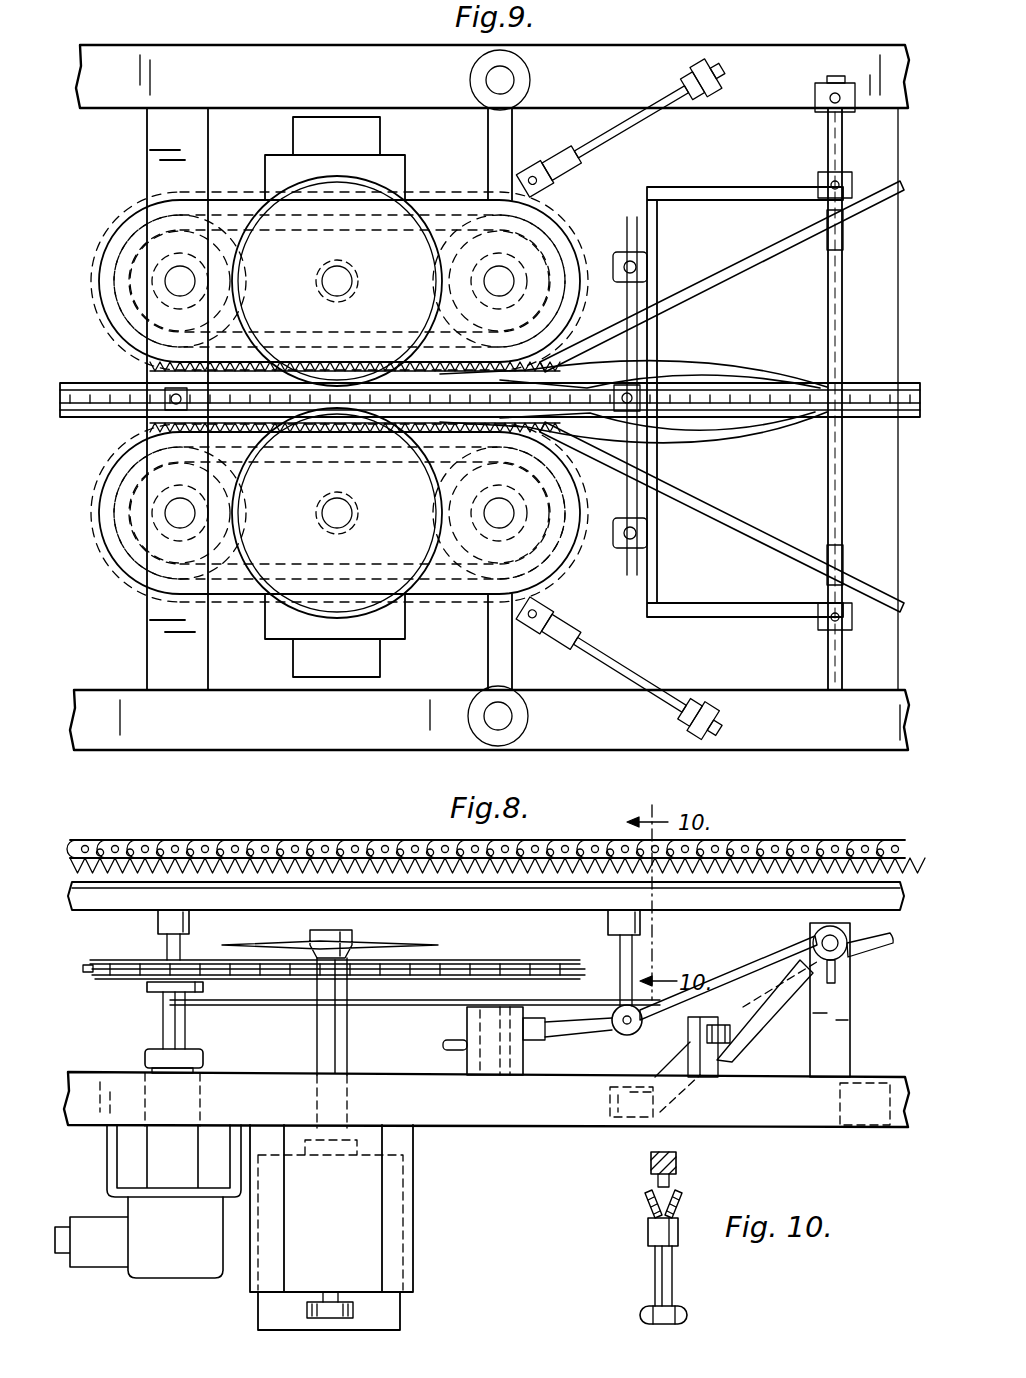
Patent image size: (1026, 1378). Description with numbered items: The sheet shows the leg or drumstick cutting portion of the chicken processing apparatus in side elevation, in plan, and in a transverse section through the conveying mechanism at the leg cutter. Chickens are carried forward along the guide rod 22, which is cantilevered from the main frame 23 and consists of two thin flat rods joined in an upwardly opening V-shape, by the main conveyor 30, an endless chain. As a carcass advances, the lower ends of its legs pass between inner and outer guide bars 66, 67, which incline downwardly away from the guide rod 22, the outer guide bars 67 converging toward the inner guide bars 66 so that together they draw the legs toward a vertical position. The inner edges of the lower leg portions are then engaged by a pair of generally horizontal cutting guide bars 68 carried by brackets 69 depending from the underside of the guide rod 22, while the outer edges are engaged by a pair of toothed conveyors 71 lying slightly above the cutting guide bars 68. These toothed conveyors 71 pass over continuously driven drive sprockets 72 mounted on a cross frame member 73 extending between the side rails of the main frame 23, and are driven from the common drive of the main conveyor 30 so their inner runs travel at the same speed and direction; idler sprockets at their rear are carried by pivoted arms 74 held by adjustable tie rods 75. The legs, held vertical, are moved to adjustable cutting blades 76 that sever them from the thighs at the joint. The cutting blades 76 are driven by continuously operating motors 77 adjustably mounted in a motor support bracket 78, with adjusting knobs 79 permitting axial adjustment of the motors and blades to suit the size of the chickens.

In FIG. 9, the guide rod 22 is at (96, 432).
In FIG. 8, the guide rod 22 is at (522, 913).
In FIG. 10, the guide rod 22 is at (645, 1205).
In FIG. 9, the main frame 23 is at (290, 48).
In FIG. 9, the main conveyor 30 is at (102, 380).
In FIG. 8, the main conveyor 30 is at (292, 846).
In FIG. 10, the main conveyor 30 is at (677, 1163).
In FIG. 9, the inner guide bars 66 is at (738, 364).
In FIG. 9, the outer guide bars 67 is at (770, 256).
In FIG. 8, the outer guide bars 67 is at (737, 988).
In FIG. 9, the cutting guide bars 68 is at (262, 340).
In FIG. 8, the cutting guide bars 68 is at (300, 1003).
In FIG. 10, the cutting guide bars 68 is at (664, 1324).
In FIG. 9, the brackets 69 is at (160, 412).
In FIG. 8, the brackets 69 is at (157, 925).
In FIG. 10, the brackets 69 is at (650, 1240).
In FIG. 9, the toothed conveyors 71 is at (130, 207).
In FIG. 8, the toothed conveyors 71 is at (88, 962).
In FIG. 9, the drive sprockets 72 is at (232, 238).
In FIG. 8, the drive sprockets 72 is at (147, 986).
In FIG. 9, the cross frame member 73 is at (150, 163).
In FIG. 9, the pivoted arms 74 is at (490, 130).
In FIG. 9, the adjustable tie rods 75 is at (626, 130).
In FIG. 8, the adjustable tie rods 75 is at (604, 1040).
In FIG. 9, the cutting blades 76 is at (292, 180).
In FIG. 8, the cutting blades 76 is at (282, 945).
In FIG. 9, the motors 77 is at (405, 172).
In FIG. 8, the motors 77 is at (268, 1310).
In FIG. 8, the motor support bracket 78 is at (413, 1184).
In FIG. 8, the adjusting knobs 79 is at (345, 1320).